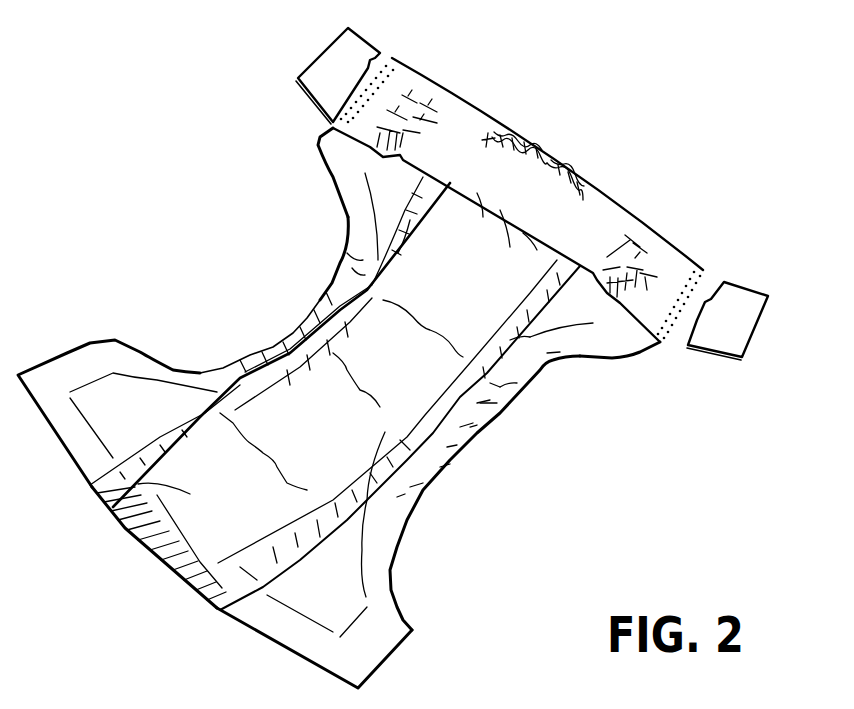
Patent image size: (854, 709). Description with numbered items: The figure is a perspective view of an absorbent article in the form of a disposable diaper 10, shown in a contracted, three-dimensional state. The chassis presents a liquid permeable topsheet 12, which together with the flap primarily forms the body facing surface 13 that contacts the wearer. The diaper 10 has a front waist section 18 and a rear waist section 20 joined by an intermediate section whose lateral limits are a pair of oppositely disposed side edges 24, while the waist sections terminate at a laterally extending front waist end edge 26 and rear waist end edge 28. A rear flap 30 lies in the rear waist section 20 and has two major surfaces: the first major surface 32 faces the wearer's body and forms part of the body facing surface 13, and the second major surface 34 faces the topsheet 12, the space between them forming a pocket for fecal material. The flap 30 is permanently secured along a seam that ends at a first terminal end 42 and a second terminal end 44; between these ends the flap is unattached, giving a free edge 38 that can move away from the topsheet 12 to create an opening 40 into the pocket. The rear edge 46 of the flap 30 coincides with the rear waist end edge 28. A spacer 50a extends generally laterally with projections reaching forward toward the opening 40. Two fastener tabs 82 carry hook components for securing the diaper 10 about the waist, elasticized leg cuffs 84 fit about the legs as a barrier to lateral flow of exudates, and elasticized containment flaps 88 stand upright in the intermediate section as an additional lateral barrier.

The disposable diaper 10 is at (503, 612).
The topsheet 12 is at (300, 357).
The body facing surface 13 is at (423, 447).
The front waist section 18 is at (130, 522).
The rear waist section 20 is at (590, 310).
The side edges 24 is at (345, 192).
The front waist end edge 26 is at (183, 585).
The rear waist end edge 28 is at (613, 197).
The rear flap 30 is at (457, 127).
The first major surface 32 is at (500, 173).
The second major surface 34 is at (550, 157).
The free edge 38 is at (482, 207).
The opening 40 is at (504, 220).
The first terminal end 42 is at (320, 135).
The second terminal end 44 is at (663, 355).
The rear edge 46 is at (653, 227).
The spacer 50a is at (443, 197).
The fastener tabs 82 is at (333, 68).
The leg cuffs 84 is at (335, 302).
The containment flaps 88 is at (458, 352).